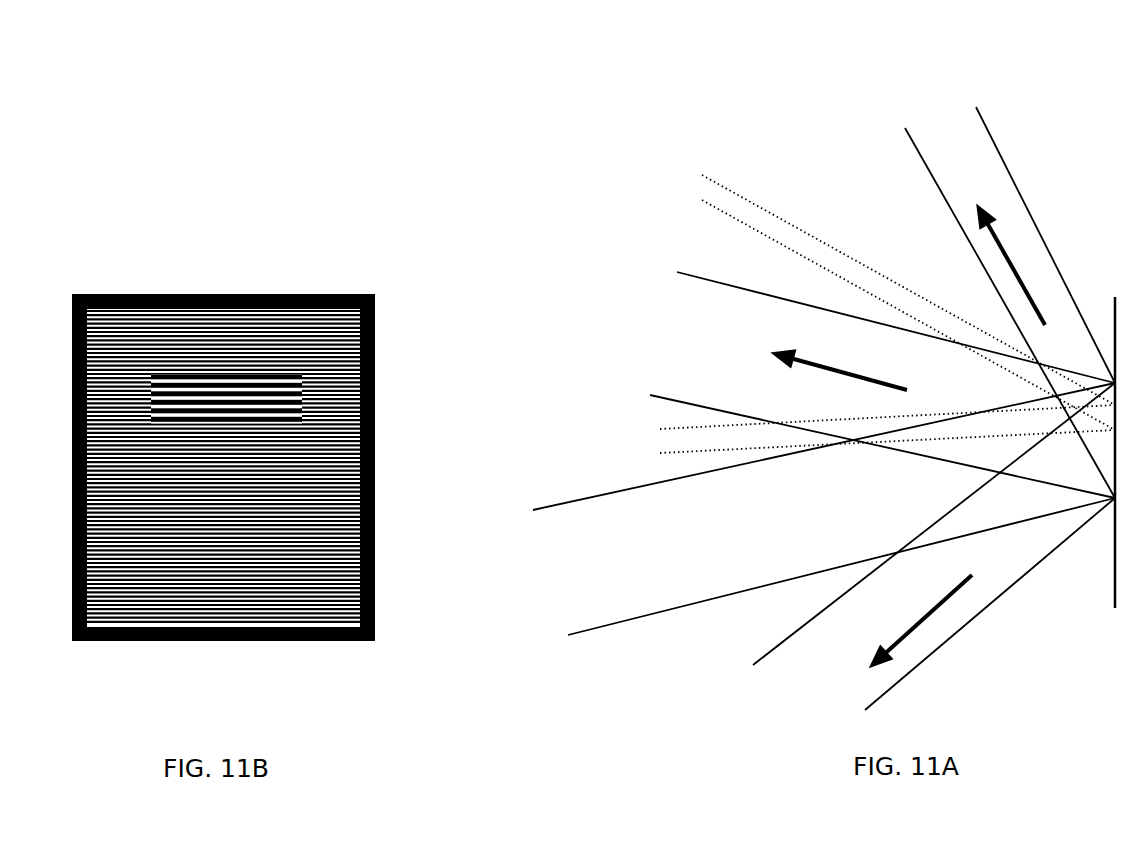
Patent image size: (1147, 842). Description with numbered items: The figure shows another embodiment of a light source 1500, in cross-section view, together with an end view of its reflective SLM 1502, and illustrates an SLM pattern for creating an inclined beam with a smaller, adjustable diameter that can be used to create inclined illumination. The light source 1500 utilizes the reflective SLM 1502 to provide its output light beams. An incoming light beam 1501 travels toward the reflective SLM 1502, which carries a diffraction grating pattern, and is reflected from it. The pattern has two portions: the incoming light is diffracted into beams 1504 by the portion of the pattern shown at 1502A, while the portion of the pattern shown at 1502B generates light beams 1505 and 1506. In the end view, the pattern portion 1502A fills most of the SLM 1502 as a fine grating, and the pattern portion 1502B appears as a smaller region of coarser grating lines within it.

In FIG. 11A, the light source 1500 is at (582, 104).
In FIG. 11A, the incoming light beam 1501 is at (704, 540).
In FIG. 11B, the reflective SLM 1502 is at (120, 294).
In FIG. 11A, the reflective SLM 1502 is at (1118, 474).
In FIG. 11B, the portion of the pattern 1502A is at (308, 332).
In FIG. 11B, the portion of the pattern 1502B is at (288, 410).
In FIG. 11A, the beams 1504 is at (723, 257).
In FIG. 11A, the light beam 1505 is at (777, 222).
In FIG. 11A, the light beam 1506 is at (677, 429).